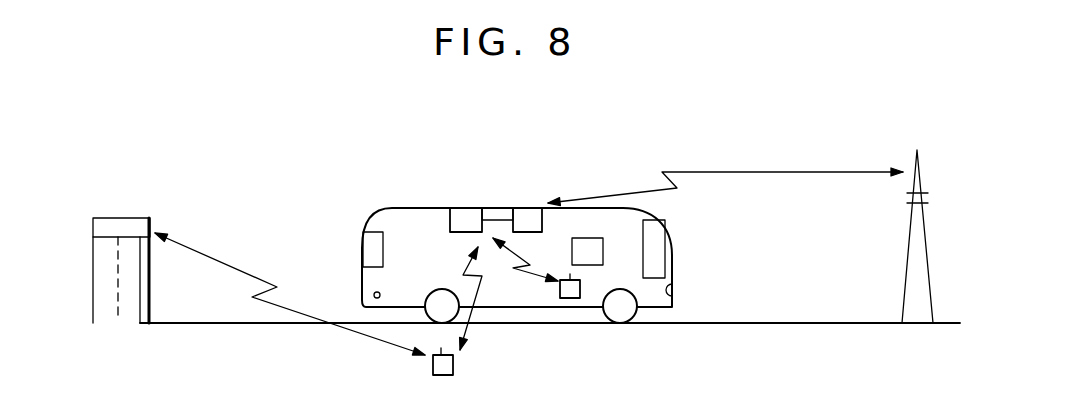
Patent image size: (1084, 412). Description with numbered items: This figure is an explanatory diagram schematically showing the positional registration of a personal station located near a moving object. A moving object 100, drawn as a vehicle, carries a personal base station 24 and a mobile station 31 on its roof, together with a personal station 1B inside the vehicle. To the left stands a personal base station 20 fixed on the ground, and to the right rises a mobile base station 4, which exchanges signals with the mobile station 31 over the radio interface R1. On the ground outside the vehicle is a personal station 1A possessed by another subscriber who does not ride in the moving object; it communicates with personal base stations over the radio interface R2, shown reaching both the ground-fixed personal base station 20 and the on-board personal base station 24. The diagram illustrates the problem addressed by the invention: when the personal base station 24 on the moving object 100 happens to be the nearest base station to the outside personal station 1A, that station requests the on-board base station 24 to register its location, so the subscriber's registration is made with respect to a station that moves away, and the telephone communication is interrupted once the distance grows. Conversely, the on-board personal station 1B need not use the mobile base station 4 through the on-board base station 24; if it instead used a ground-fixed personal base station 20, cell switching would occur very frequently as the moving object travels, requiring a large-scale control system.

The personal base station 20 is at (130, 218).
The moving object 100 is at (383, 218).
The personal base station 24 is at (463, 210).
The mobile station 31 is at (528, 210).
The personal station 1A is at (455, 362).
The personal station 1B is at (568, 298).
The mobile base station 4 is at (911, 170).
The radio interface R1 is at (725, 171).
The radio interface R2 is at (290, 294).